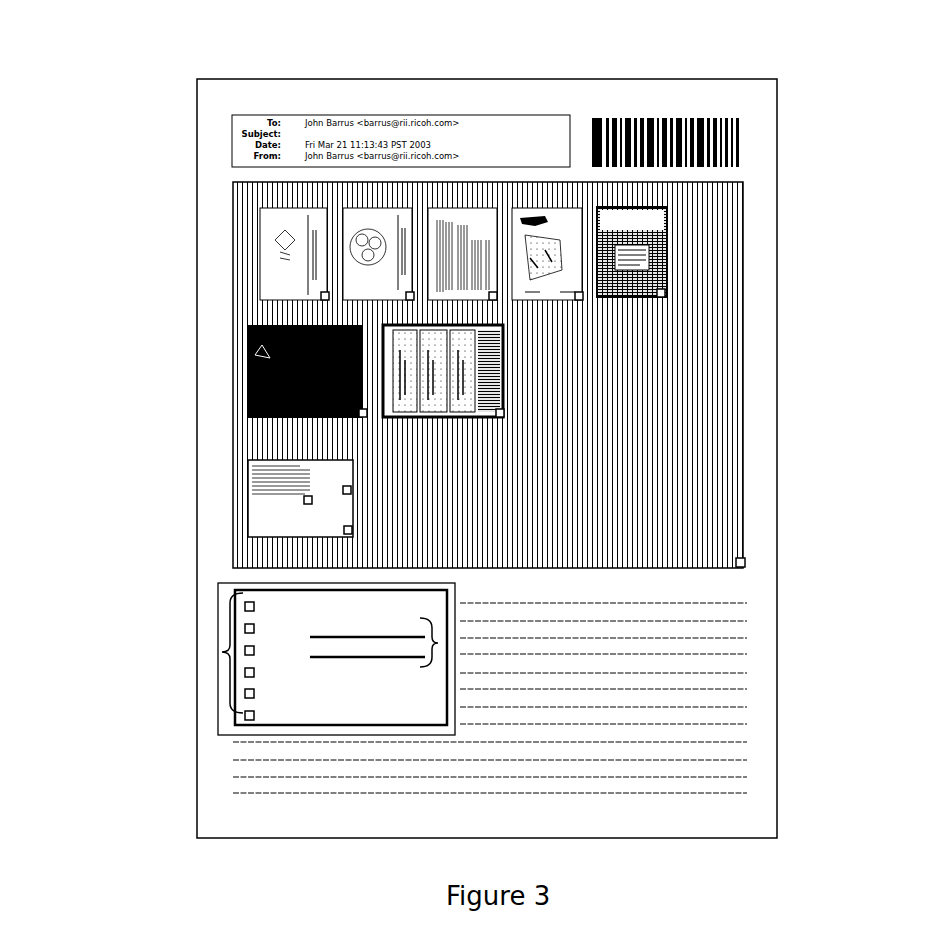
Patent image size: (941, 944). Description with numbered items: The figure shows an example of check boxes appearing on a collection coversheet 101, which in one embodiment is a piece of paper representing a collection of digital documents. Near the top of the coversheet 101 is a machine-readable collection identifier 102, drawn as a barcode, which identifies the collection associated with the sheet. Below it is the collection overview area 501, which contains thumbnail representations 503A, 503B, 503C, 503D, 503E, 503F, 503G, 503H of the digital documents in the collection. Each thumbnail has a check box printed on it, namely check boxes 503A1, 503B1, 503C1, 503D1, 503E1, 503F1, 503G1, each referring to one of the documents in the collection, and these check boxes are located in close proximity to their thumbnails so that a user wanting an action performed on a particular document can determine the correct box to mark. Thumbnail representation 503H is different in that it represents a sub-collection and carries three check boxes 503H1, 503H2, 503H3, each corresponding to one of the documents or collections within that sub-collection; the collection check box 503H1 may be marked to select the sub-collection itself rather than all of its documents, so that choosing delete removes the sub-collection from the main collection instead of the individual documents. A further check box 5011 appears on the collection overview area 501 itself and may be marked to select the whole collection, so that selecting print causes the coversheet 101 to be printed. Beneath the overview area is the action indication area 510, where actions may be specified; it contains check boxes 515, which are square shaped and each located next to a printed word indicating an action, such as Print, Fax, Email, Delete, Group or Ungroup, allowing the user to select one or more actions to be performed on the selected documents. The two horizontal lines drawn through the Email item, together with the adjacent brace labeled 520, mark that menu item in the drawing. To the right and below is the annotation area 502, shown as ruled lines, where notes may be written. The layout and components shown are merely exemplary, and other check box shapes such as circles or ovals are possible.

The collection coversheet 101 is at (185, 68).
The machine-readable collection identifier 102 is at (753, 122).
The collection overview area 501 is at (690, 452).
The check box 5011 is at (748, 562).
The annotation area 502 is at (723, 687).
The thumbnail representation 503A is at (287, 268).
The check box 503A1 is at (331, 302).
The thumbnail representation 503B is at (381, 258).
The check box 503B1 is at (414, 302).
The thumbnail representation 503C is at (463, 252).
The check box 503C1 is at (497, 304).
The thumbnail representation 503D is at (555, 240).
The check box 503D1 is at (583, 303).
The thumbnail representation 503E is at (665, 248).
The check box 503E1 is at (666, 300).
The thumbnail representation 503F is at (263, 352).
The check box 503F1 is at (367, 420).
The thumbnail representation 503G is at (481, 372).
The check box 503G1 is at (504, 421).
The thumbnail representation 503H is at (256, 478).
The collection check box 503H1 is at (354, 530).
The check box 503H2 is at (353, 490).
The check box 503H3 is at (308, 505).
The action indication area 510 is at (220, 739).
The check boxes 515 is at (209, 652).
The selected menu item (Email) 520 is at (446, 644).